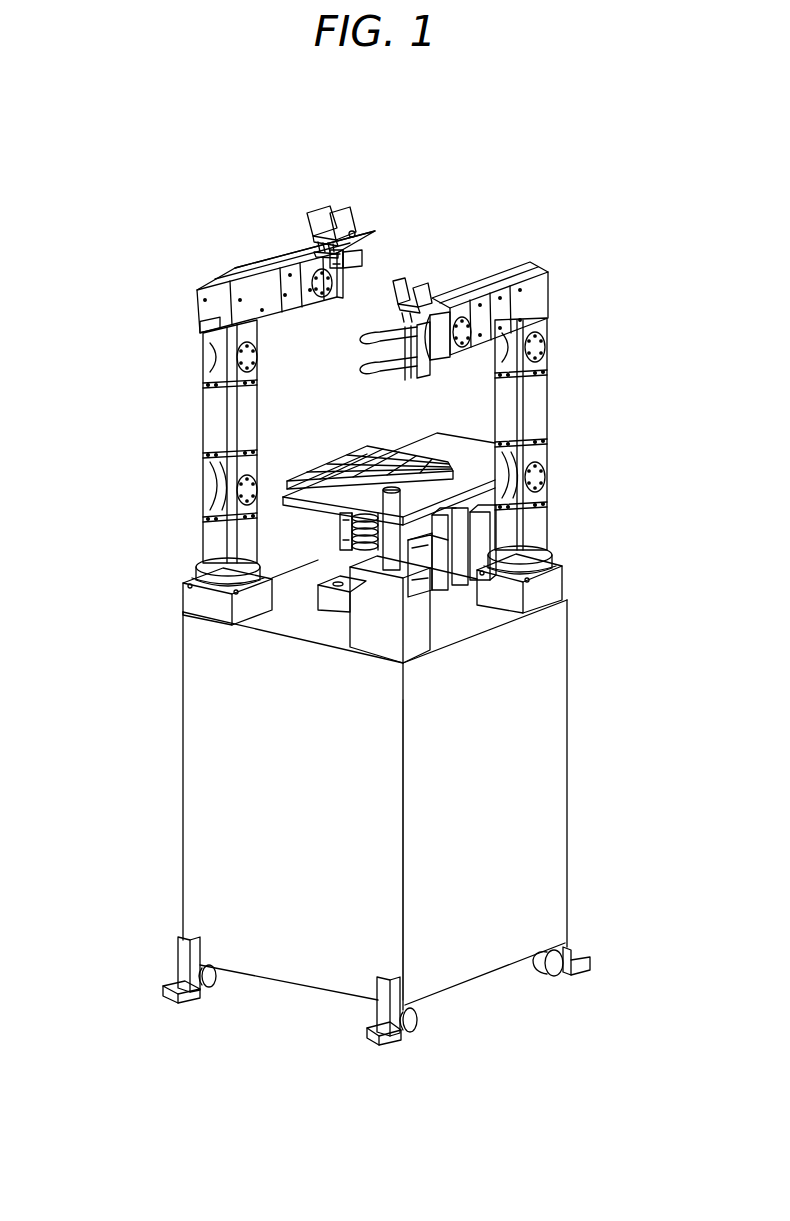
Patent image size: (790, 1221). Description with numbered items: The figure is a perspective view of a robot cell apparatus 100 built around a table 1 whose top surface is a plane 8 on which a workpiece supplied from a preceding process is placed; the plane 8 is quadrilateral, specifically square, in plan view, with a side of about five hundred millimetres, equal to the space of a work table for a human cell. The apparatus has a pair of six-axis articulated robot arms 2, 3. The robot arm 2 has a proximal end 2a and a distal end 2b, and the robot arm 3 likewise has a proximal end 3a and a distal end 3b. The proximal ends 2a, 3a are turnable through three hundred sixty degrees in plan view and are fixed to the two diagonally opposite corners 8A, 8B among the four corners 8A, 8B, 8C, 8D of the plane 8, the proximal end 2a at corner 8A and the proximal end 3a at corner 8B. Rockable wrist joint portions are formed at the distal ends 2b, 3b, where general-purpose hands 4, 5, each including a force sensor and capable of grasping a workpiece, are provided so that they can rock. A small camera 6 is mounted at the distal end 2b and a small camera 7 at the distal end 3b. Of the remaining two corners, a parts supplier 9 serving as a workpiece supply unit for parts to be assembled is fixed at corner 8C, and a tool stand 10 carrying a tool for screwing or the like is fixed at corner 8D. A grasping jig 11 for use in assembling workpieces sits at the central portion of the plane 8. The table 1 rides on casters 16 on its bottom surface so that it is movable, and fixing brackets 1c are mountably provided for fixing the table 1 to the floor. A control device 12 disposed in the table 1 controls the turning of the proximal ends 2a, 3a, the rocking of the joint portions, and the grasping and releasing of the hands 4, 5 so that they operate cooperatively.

The robot cell apparatus 100 is at (497, 188).
The table 1 is at (523, 710).
The fixing brackets 1c is at (388, 1022).
The robot arm 2 is at (208, 403).
The proximal end 2a is at (212, 557).
The distal end 2b is at (303, 250).
The robot arm 3 is at (538, 400).
The proximal end 3a is at (538, 527).
The distal end 3b is at (483, 317).
The hand 4 is at (347, 260).
The hand 5 is at (367, 330).
The small camera 6 is at (317, 210).
The small camera 7 is at (430, 290).
The plane 8 is at (297, 583).
The corner 8A is at (213, 610).
The corner 8B is at (547, 594).
The corner 8C is at (347, 543).
The corner 8D is at (387, 650).
The parts supplier 9 is at (348, 453).
The tool stand 10 is at (357, 635).
The grasping jig 11 is at (327, 600).
The control device 12 is at (413, 758).
The casters 16 is at (417, 1015).